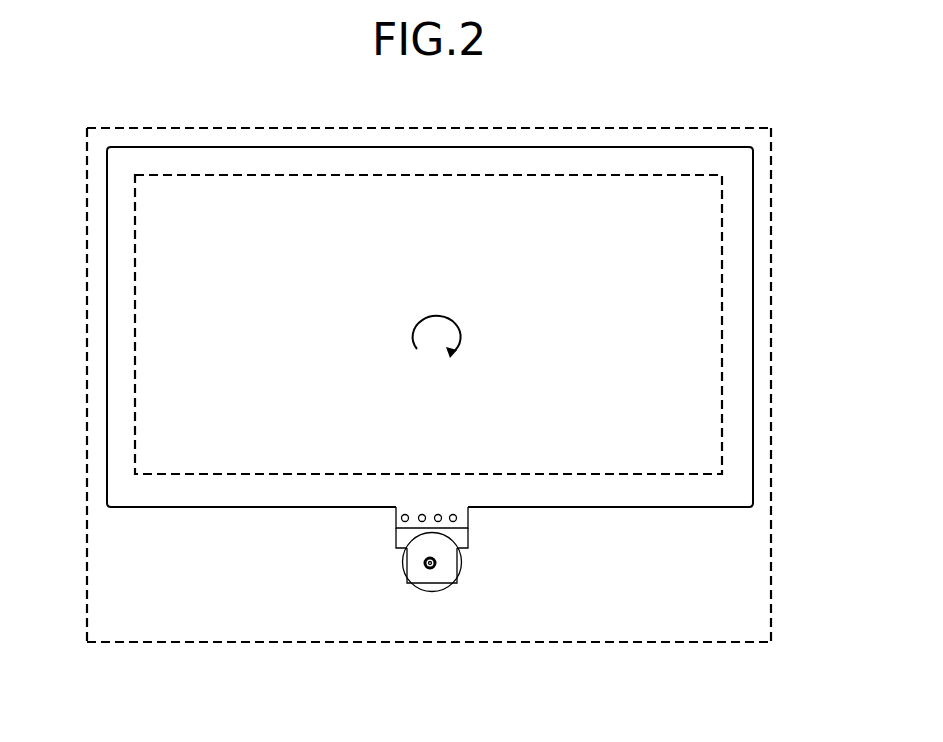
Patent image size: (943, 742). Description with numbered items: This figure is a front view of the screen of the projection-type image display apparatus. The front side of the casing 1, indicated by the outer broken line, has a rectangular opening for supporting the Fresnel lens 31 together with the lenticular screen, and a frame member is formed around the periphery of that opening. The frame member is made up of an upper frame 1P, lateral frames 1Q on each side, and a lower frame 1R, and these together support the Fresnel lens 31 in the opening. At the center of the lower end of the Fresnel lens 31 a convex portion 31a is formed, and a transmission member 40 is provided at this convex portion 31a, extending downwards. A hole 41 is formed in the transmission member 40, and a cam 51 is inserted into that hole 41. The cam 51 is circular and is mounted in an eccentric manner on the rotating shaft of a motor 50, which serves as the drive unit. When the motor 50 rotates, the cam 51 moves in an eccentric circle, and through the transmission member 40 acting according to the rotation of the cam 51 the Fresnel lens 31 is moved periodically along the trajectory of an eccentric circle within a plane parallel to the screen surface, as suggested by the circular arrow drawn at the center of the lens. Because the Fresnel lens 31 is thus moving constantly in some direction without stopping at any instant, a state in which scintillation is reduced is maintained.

The casing 1 is at (479, 397).
The upper frame 1P is at (348, 133).
The lateral frames 1Q is at (93, 330).
The lower frame 1R is at (668, 489).
The Fresnel lens 31 is at (562, 147).
The convex portion 31a is at (393, 527).
The transmission member 40 is at (470, 538).
The hole 41 is at (430, 563).
The motor 50 is at (433, 592).
The cam 51 is at (437, 563).